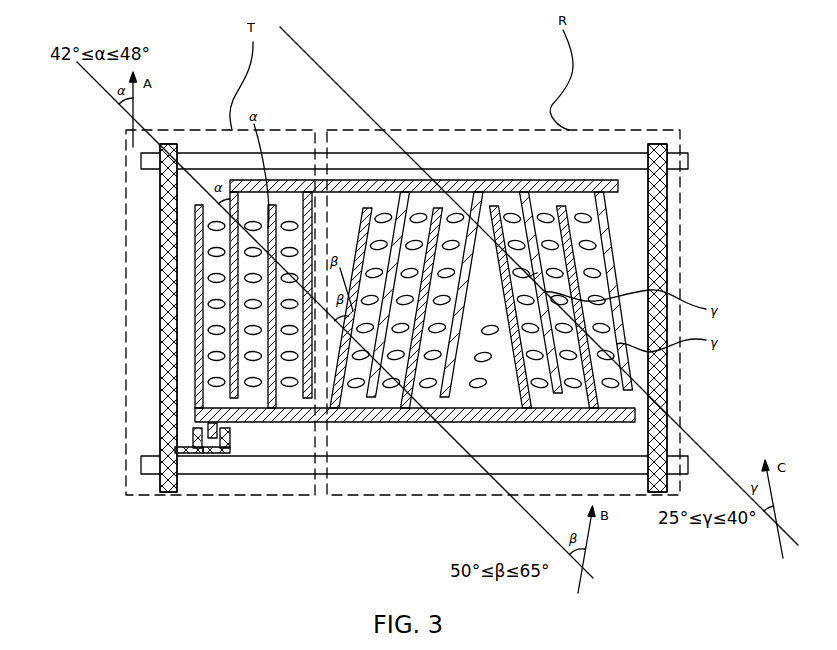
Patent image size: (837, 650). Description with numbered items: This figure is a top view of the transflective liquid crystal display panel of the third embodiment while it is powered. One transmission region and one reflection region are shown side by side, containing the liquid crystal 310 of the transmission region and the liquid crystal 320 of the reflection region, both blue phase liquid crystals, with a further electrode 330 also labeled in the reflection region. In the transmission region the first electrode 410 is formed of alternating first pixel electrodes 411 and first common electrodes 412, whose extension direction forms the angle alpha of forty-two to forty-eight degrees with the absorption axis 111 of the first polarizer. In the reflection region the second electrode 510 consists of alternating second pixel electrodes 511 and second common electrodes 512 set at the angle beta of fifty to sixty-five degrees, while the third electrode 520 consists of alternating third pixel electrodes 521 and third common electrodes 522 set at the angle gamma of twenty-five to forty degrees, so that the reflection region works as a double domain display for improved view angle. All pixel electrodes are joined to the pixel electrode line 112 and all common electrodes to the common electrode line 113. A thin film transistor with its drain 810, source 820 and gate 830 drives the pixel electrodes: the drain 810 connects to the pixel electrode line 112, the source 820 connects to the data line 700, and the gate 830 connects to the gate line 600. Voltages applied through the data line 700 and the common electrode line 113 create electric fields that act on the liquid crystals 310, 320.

The absorption axis of the first polarizer 111 is at (518, 507).
The pixel electrode line 112 is at (378, 423).
The common electrode line 113 is at (385, 182).
The liquid crystal in the transmission region 310 is at (198, 278).
The liquid crystal in the reflection region 320 is at (524, 192).
The third filter plate 330 is at (594, 193).
The first electrode 410 is at (53, 333).
The first pixel electrode 411 is at (203, 362).
The first common electrode 412 is at (212, 336).
The second electrode 510 is at (485, 83).
The second pixel electrode 511 is at (438, 208).
The second common electrode 512 is at (478, 192).
The third electrode 520 is at (728, 240).
The third pixel electrode 521 is at (578, 272).
The third common electrode 522 is at (612, 243).
The gate line 600 is at (152, 466).
The data line 700 is at (160, 192).
The drain 810 is at (232, 426).
The source 820 is at (217, 456).
The gate 830 is at (206, 455).